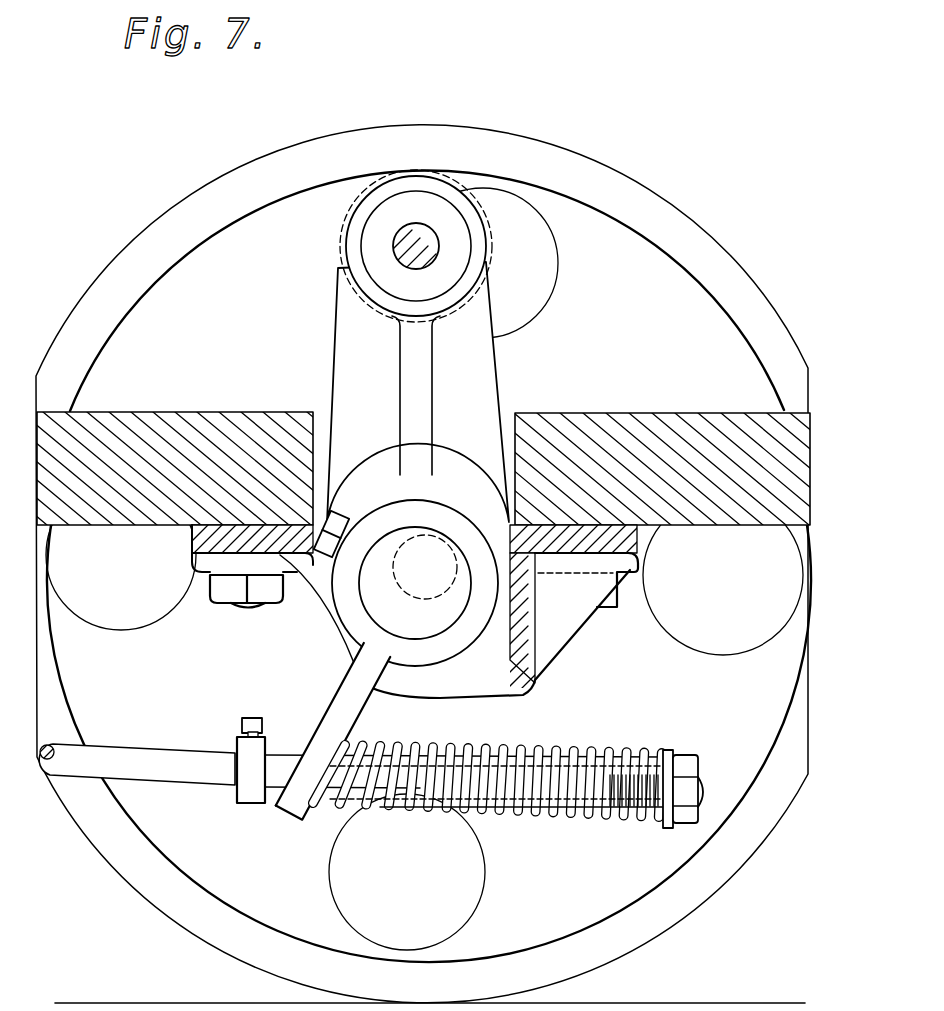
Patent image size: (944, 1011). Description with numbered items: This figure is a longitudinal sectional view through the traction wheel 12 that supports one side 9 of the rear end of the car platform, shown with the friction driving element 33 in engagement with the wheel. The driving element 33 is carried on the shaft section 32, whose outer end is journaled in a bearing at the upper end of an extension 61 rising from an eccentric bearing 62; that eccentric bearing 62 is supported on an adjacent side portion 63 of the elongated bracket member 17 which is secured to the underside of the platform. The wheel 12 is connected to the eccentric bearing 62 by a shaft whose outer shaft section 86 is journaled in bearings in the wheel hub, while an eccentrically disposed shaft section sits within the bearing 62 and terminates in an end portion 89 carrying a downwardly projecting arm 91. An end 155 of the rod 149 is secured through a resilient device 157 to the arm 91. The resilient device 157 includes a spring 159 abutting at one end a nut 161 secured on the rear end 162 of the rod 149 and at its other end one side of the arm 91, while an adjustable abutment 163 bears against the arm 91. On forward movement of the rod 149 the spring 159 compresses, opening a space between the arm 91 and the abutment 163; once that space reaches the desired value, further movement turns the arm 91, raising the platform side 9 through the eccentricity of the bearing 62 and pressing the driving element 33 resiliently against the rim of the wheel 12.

The traction wheel 12 is at (158, 885).
The side of the rear end of the platform 9 is at (580, 413).
The driving element 33 is at (396, 246).
The shaft section 32 is at (419, 267).
The extension 61 is at (428, 354).
The eccentric bearing 62 is at (389, 556).
The outer shaft section 86 is at (428, 600).
The side portion of the bracket member 63 is at (296, 604).
The bracket member 17 is at (513, 611).
The end portion 89 is at (389, 632).
The arm 91 is at (361, 707).
The rod 149 is at (158, 760).
The abutment 163 is at (268, 738).
The resilient device 157 is at (546, 822).
The spring 159 is at (613, 756).
The end of the rod 155 is at (662, 825).
The nut 161 is at (699, 754).
The rear end of the rod 162 is at (704, 790).